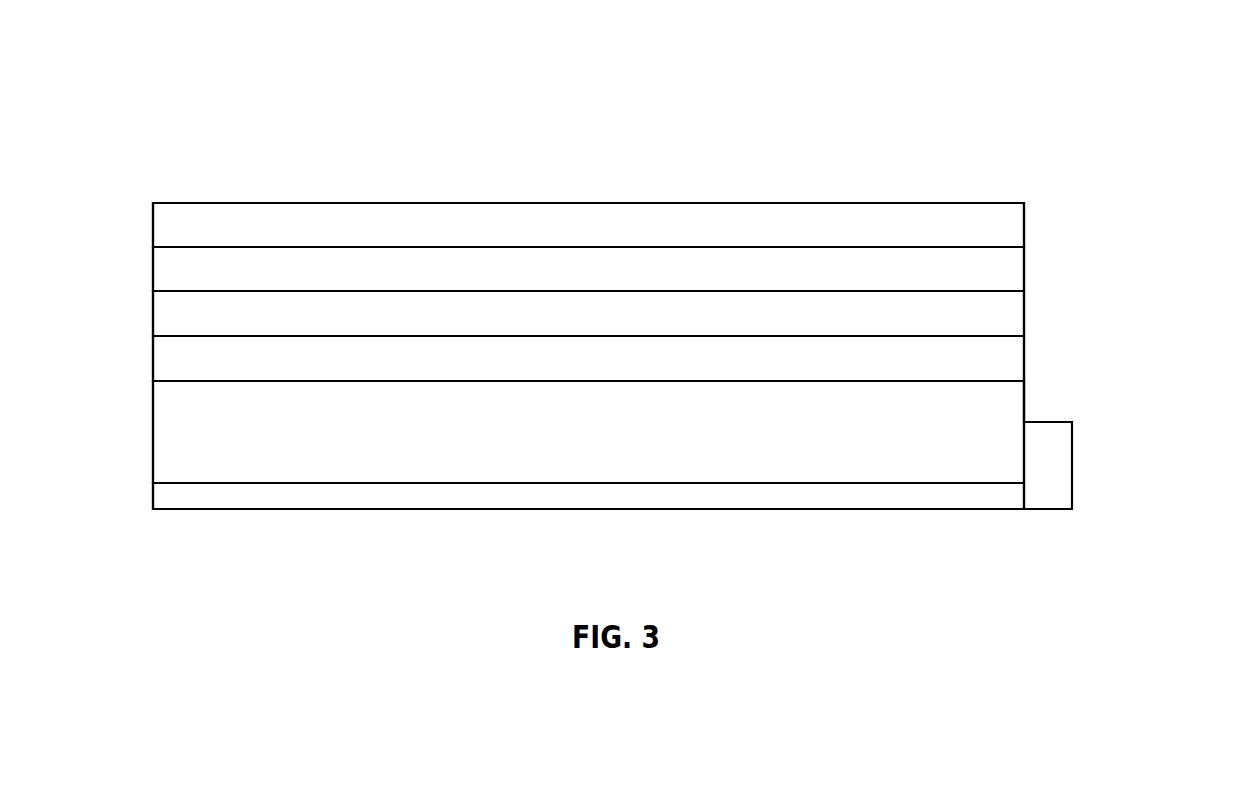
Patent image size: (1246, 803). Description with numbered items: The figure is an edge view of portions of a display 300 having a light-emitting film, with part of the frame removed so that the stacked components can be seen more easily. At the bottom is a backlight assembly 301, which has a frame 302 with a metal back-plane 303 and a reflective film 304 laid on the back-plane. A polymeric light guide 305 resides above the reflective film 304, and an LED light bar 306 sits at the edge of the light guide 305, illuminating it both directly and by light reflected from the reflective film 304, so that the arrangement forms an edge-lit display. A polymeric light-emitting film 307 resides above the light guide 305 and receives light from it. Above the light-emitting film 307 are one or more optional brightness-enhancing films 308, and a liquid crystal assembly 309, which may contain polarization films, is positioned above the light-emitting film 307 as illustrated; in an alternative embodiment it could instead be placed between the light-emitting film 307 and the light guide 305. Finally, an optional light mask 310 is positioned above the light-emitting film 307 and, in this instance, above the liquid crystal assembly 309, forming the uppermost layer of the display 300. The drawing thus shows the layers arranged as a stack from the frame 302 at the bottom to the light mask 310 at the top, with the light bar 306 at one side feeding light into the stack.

The display 300 is at (272, 46).
The backlight assembly 301 is at (1150, 294).
The frame 302 is at (152, 440).
The metal back-plane 303 is at (340, 510).
The reflective film 304 is at (423, 494).
The polymeric light guide 305 is at (1006, 415).
The LED light bar 306 is at (1060, 460).
The polymeric light-emitting film 307 is at (160, 362).
The brightness-enhancing film 308 is at (1008, 312).
The liquid crystal assembly 309 is at (160, 268).
The light mask 310 is at (1012, 218).